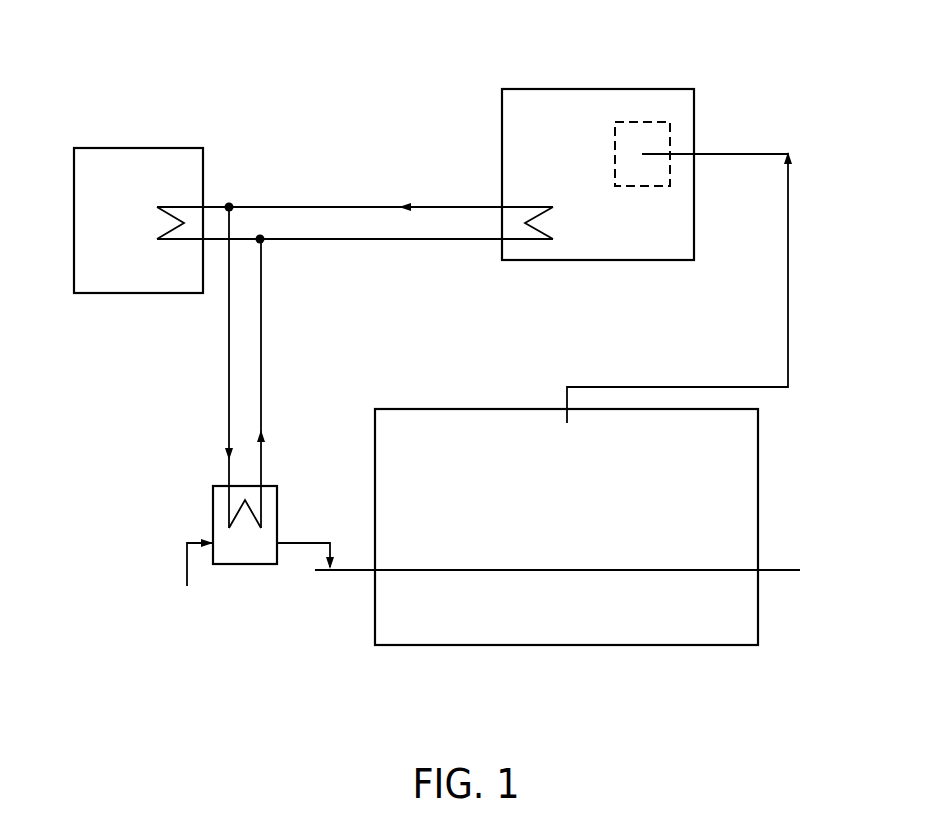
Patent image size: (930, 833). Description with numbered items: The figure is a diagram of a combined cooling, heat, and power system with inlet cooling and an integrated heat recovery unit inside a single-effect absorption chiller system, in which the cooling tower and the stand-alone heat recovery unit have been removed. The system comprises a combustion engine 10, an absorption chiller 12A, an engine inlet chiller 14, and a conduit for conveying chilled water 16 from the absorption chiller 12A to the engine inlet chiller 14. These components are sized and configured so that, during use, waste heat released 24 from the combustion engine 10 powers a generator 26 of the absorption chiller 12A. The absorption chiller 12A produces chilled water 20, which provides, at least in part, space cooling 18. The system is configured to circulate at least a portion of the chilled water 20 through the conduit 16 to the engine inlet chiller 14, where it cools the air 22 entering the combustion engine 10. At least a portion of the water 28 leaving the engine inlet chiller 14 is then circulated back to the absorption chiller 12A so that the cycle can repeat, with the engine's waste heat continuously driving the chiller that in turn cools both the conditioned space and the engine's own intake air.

The combustion engine 10 is at (588, 657).
The absorption chiller 12A is at (550, 76).
The engine inlet chiller 14 is at (201, 499).
The conduit for conveying chilled water 16 is at (217, 342).
The space cooling 18 is at (145, 136).
The chilled water 20 is at (337, 195).
The air entering the combustion engine 22 is at (312, 531).
The waste heat released 24 is at (800, 237).
The generator 26 is at (642, 110).
The water 28 is at (273, 334).